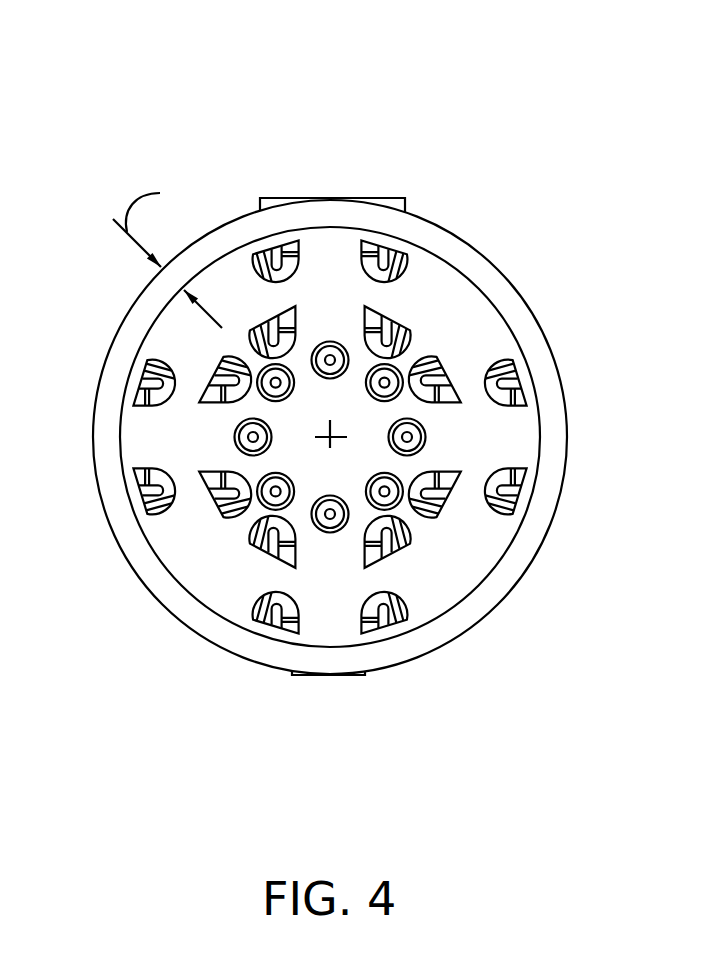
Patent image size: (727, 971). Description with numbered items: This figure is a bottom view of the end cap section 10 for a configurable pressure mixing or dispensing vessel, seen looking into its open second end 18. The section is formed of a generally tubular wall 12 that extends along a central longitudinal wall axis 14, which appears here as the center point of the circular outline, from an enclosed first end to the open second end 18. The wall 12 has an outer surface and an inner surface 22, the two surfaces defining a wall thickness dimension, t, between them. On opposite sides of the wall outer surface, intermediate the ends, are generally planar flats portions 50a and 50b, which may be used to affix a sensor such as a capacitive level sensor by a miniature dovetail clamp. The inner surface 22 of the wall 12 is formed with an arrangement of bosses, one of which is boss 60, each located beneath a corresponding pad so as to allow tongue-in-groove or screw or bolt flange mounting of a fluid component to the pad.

The end cap section 10 is at (577, 87).
The tubular wall 12 is at (561, 380).
The central longitudinal wall axis 14 is at (336, 434).
The open second end 18 is at (172, 615).
The inner surface 22 is at (468, 562).
The flats portion 50a is at (299, 197).
The flats portion 50b is at (300, 677).
The boss 60 is at (215, 407).